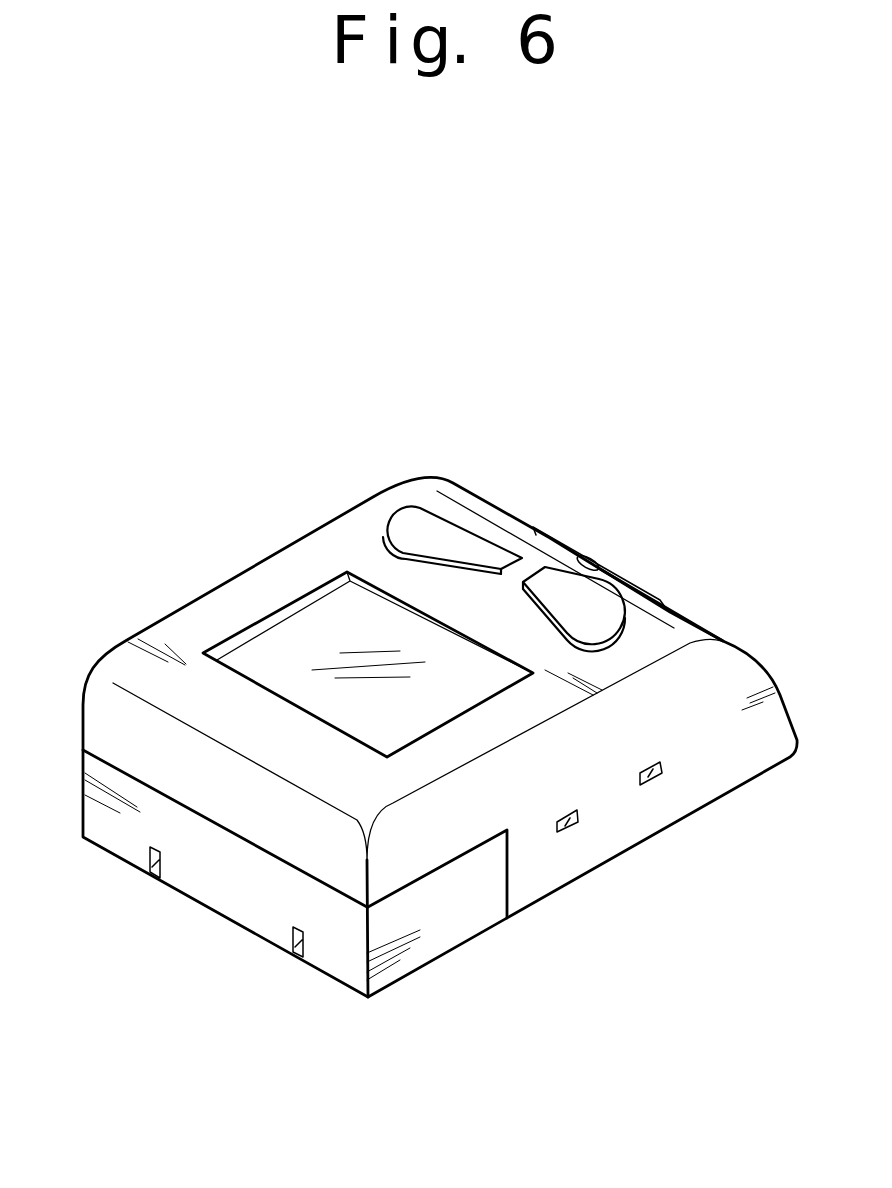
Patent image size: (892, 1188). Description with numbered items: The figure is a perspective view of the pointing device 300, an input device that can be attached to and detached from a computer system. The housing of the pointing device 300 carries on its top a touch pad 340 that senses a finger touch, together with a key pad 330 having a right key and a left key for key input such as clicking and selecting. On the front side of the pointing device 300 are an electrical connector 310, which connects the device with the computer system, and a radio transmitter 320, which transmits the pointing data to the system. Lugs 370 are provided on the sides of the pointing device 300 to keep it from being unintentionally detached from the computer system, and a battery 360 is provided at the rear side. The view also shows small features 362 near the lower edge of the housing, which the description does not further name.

The pointing device 300 is at (240, 309).
The electrical connector 310 is at (637, 580).
The radio transmitter 320 is at (583, 557).
The key pad 330 is at (435, 523).
The touch pad 340 is at (303, 633).
The battery 360 is at (443, 923).
The engagement slots 362 is at (293, 957).
The lugs 370 is at (647, 778).